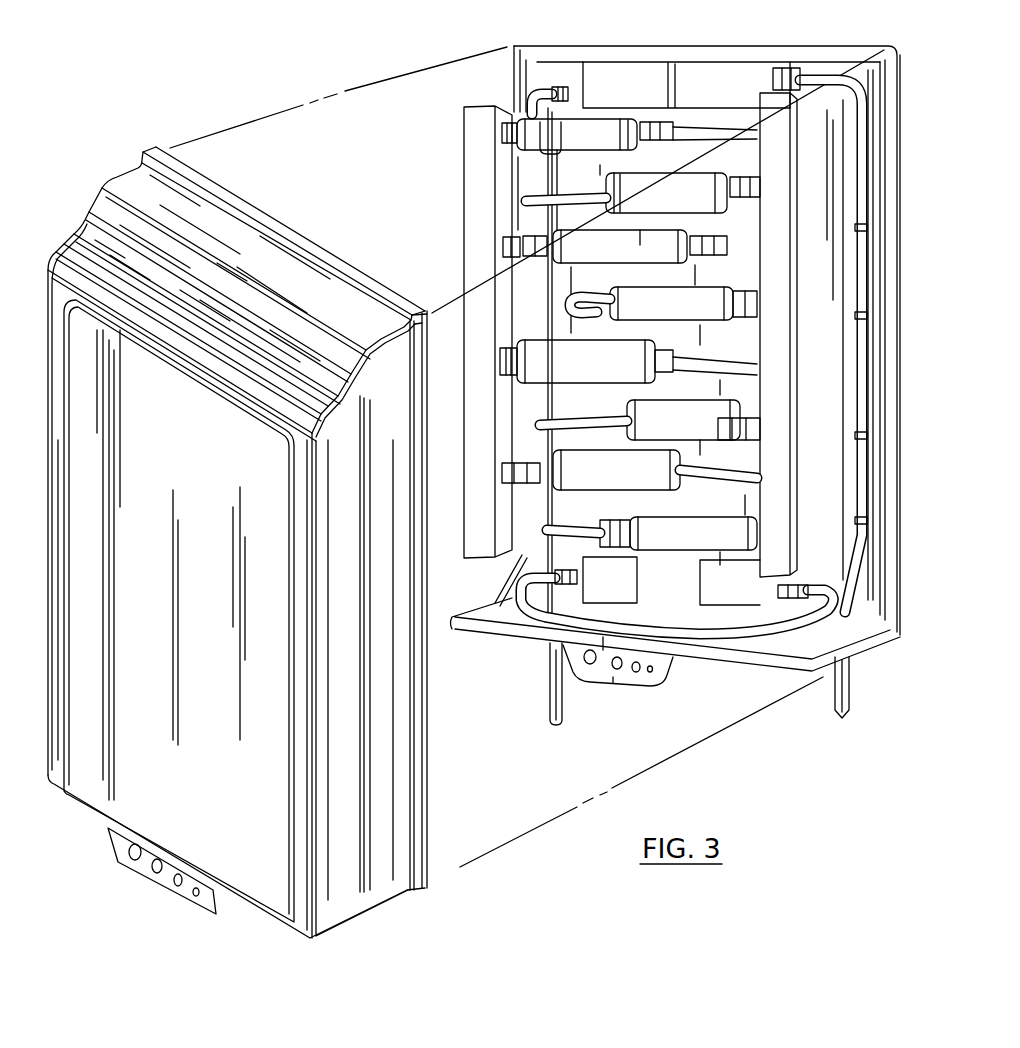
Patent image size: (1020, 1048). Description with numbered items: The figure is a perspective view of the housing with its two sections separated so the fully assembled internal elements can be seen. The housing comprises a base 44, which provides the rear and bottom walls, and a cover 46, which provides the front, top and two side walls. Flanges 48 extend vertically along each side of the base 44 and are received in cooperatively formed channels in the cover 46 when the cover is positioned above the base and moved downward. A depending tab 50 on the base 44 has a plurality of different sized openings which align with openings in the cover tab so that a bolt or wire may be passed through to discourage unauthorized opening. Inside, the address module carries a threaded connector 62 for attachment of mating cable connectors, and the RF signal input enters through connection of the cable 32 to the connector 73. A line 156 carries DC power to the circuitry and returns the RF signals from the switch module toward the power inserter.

The cover 46 is at (134, 185).
The threaded connector 62 is at (185, 898).
The base 44 is at (813, 58).
The flanges 48 is at (513, 90).
The connector 73 is at (567, 86).
The cable 32 is at (548, 695).
The line 156 is at (838, 700).
The depending tab 50 is at (640, 683).